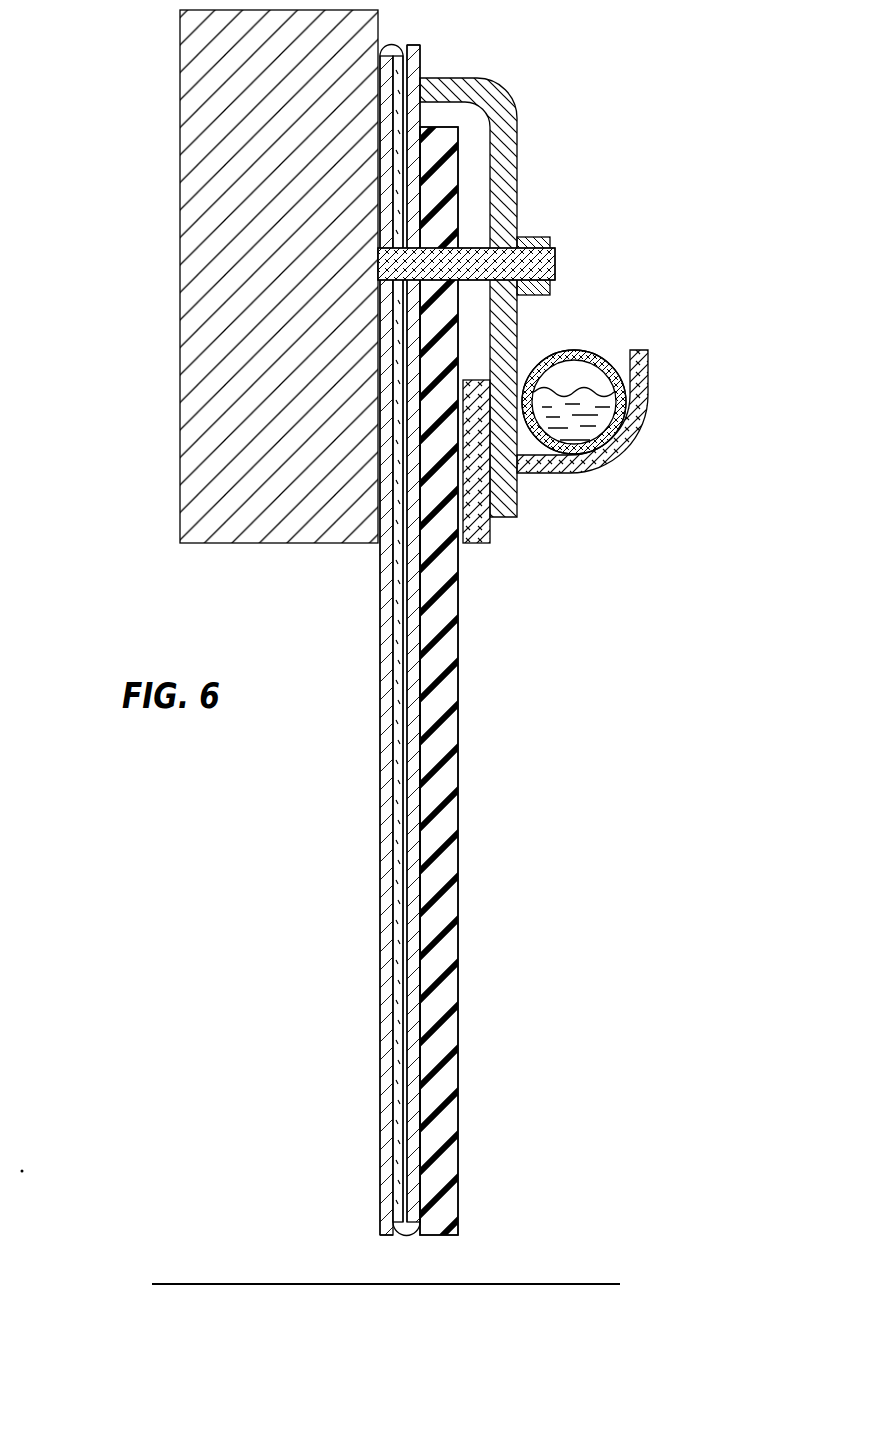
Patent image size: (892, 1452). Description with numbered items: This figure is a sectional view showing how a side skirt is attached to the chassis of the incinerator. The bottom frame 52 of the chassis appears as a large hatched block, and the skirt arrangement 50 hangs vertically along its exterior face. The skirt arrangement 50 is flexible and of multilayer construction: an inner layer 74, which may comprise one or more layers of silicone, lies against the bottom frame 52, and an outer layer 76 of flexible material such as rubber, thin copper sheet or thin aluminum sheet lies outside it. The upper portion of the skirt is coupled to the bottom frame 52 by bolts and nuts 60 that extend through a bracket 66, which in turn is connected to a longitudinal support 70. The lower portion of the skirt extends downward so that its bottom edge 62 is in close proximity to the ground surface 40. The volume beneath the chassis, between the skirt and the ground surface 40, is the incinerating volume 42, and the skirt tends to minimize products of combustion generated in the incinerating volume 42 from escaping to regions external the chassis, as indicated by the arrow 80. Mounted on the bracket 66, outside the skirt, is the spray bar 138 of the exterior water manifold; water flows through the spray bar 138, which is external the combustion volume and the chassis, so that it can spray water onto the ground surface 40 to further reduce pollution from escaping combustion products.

The ground surface 40 is at (198, 1284).
The incinerating volume 42 is at (277, 923).
The skirt arrangement 50 is at (552, 1108).
The bottom frame 52 is at (180, 300).
The bolts and nuts 60 is at (551, 241).
The bottom edge 62 is at (439, 1248).
The bracket 66 is at (517, 117).
The longitudinal support 70 is at (495, 532).
The inner layer 74 is at (420, 67).
The outer layer 76 is at (458, 687).
The arrow 80 is at (360, 1256).
The spray bar 138 is at (588, 352).